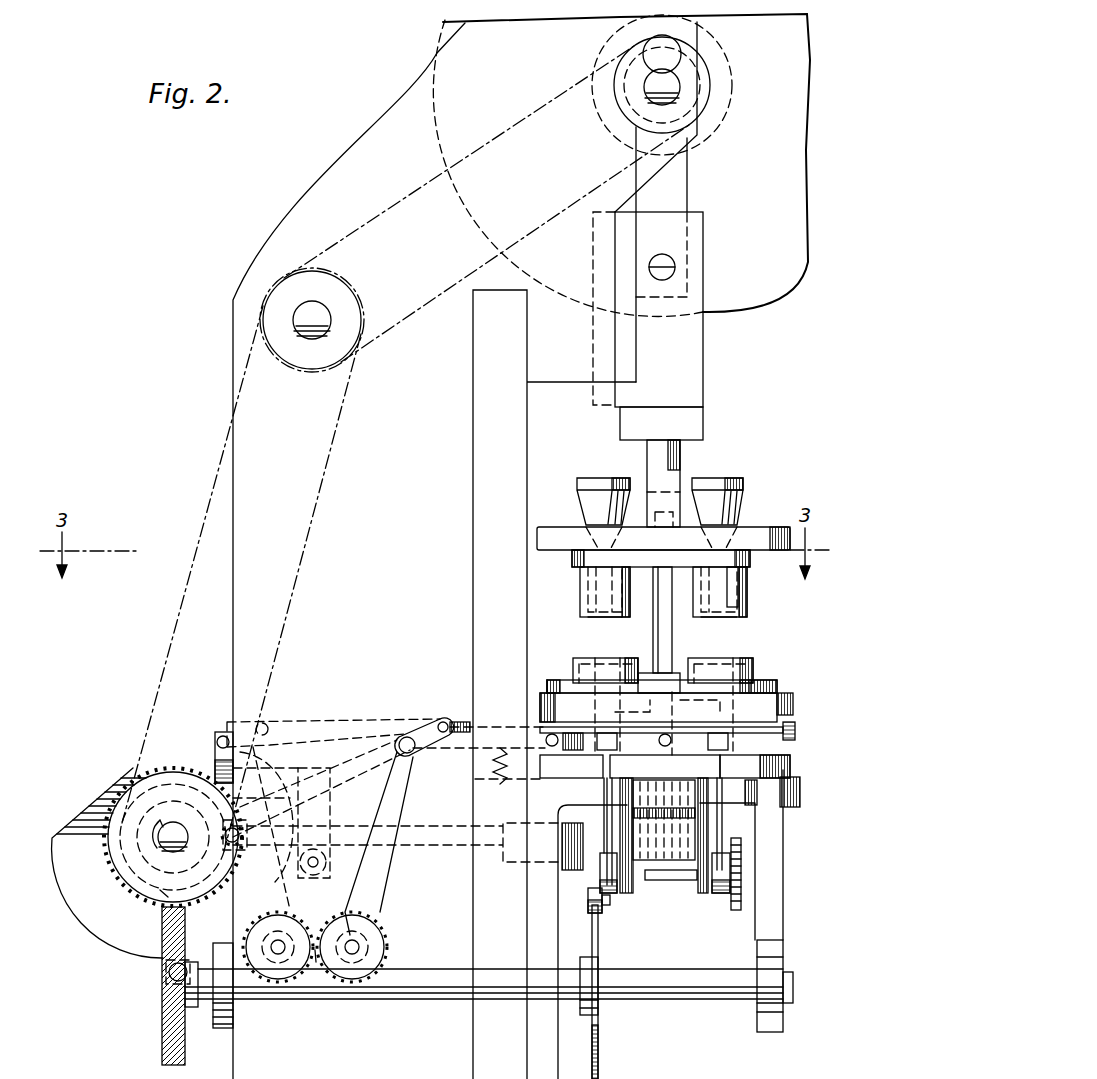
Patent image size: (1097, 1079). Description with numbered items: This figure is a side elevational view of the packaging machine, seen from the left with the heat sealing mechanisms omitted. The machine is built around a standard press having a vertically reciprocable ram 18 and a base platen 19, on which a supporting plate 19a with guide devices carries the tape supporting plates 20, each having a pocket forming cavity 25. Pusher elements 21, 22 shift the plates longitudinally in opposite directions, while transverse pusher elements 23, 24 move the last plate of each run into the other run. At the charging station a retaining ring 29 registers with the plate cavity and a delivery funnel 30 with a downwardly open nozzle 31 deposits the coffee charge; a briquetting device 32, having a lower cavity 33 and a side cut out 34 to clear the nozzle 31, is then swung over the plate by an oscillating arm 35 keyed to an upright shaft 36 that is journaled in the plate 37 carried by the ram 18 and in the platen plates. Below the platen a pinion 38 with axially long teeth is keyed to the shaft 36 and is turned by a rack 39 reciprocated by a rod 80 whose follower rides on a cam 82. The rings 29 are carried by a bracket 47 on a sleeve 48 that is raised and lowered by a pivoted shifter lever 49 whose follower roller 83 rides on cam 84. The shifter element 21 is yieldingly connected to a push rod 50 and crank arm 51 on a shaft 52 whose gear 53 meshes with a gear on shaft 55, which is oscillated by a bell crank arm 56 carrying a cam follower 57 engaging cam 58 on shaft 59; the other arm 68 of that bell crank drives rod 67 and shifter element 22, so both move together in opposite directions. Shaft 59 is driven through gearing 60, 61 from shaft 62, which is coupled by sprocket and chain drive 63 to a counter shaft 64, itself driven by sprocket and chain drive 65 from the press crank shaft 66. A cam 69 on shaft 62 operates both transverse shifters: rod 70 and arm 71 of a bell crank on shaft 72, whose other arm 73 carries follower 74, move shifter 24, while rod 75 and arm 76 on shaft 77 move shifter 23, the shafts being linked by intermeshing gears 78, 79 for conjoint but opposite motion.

The ram 18 is at (697, 363).
The base platen 19 is at (790, 766).
The supporting plate 19a is at (787, 702).
The tape supporting plate 20 is at (568, 678).
The pusher element 21 is at (696, 701).
The pusher element 22 is at (593, 697).
The pusher element 23 is at (777, 677).
The pusher element 24 is at (552, 680).
The pocket forming cavity 25 is at (753, 685).
The retaining ring 29 is at (596, 657).
The delivery funnel 30 is at (583, 477).
The nozzle 31 is at (598, 586).
The briquetting device 32 is at (580, 574).
The cavity 33 is at (600, 619).
The cut out 34 is at (738, 585).
The oscillating arm 35 is at (643, 563).
The upright shaft 36 is at (653, 627).
The plate 37 is at (757, 532).
The pinion 38 is at (690, 817).
The rack 39 is at (580, 862).
The bracket 47 is at (647, 672).
The sleeve 48 is at (632, 701).
The shifter lever 49 is at (363, 764).
The push rod 50 is at (707, 738).
The crank arm 51 is at (720, 817).
The shaft 52 is at (690, 872).
The gear 53 is at (733, 905).
The shaft 55 is at (645, 880).
The bell crank arm 56 is at (612, 905).
The cam follower 57 is at (588, 895).
The cam 58 is at (598, 1046).
The shaft 59 is at (675, 972).
The gearing 60 is at (162, 1043).
The gearing 61 is at (110, 873).
The shaft 62 is at (173, 822).
The sprocket and chain drive 63 is at (210, 507).
The counter shaft 64 is at (297, 317).
The sprocket and chain drive 65 is at (407, 197).
The crank shaft 66 is at (678, 88).
The rod 67 is at (625, 752).
The bell crank arm 68 is at (607, 792).
The cam 69 is at (77, 838).
The rod 70 is at (337, 722).
The bell crank arm 71 is at (296, 880).
The shaft 72 is at (277, 953).
The bell crank arm 73 is at (205, 982).
The follower 74 is at (166, 972).
The rod 75 is at (753, 735).
The arm 76 is at (378, 868).
The shaft 77 is at (360, 946).
The gear 78 is at (317, 963).
The gear 79 is at (393, 961).
The rod 80 is at (453, 847).
The cam 82 is at (180, 770).
The follower roller 83 is at (200, 888).
The cam 84 is at (163, 887).